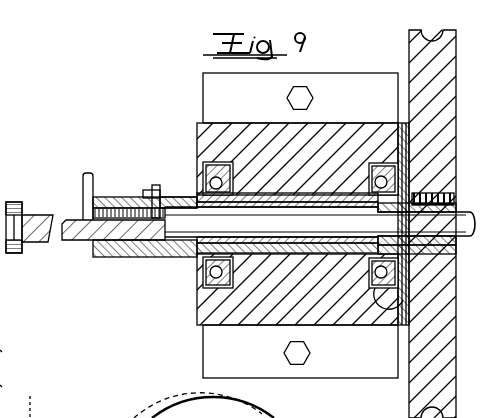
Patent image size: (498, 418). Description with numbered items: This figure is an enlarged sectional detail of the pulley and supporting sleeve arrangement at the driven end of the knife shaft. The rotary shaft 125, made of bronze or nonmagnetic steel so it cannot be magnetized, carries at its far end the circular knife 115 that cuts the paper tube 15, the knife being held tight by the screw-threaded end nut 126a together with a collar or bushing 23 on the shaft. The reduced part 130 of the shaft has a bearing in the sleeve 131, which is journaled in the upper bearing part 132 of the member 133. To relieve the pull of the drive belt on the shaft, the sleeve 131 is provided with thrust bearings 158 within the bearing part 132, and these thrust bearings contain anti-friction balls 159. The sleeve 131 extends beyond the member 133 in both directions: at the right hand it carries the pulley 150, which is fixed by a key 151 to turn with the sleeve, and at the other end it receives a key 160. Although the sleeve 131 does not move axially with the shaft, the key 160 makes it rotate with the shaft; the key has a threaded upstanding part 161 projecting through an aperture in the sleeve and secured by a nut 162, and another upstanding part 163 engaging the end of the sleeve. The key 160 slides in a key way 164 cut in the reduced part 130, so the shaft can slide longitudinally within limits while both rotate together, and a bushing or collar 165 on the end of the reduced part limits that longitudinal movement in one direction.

The rotary shaft 125 is at (290, 207).
The reduced part of shaft 130 is at (78, 242).
The sleeve 131 is at (140, 257).
The upper bearing part 132 is at (200, 300).
The member 133 is at (200, 325).
The pulley 150 is at (410, 396).
The key 151 is at (449, 186).
The thrust bearings 158 is at (204, 162).
The anti-friction balls 159 is at (404, 306).
The key 160 is at (120, 198).
The threaded upstanding part 161 is at (158, 185).
The nut 162 is at (162, 196).
The upstanding part 163 is at (88, 176).
The key way 164 is at (66, 218).
The bushing or collar 165 is at (13, 183).
The end nut 126a is at (15, 345).
The frame 23 is at (10, 342).
The paper tube 15 is at (10, 377).
The circular knife 115 is at (162, 405).